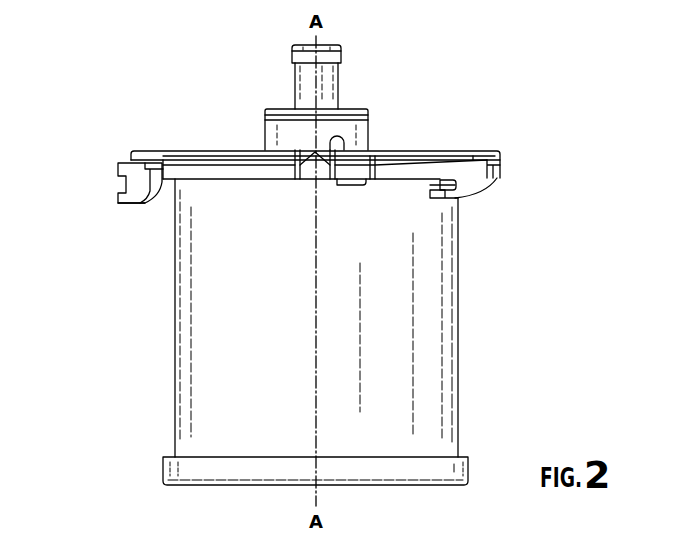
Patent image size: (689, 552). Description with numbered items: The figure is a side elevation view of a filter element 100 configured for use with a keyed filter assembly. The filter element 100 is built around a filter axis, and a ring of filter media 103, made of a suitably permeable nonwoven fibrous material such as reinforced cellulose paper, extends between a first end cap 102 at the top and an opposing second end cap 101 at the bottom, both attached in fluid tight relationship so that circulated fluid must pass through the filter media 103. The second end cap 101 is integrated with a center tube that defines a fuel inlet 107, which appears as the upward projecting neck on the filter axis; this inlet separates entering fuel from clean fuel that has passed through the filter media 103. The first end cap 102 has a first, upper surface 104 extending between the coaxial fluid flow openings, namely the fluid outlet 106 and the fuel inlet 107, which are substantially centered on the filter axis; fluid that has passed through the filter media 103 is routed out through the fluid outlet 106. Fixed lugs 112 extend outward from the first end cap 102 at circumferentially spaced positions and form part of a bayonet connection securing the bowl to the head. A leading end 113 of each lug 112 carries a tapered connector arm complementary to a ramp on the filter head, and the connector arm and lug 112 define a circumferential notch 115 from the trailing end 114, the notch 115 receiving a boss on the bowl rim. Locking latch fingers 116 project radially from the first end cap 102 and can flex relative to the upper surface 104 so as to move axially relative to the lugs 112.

The filter element 100 is at (115, 118).
The second end cap 101 is at (468, 464).
The first end cap 102 is at (500, 160).
The filter media 103 is at (369, 335).
The first surface 104 is at (421, 150).
The fluid outlet 106 is at (266, 135).
The fuel inlet 107 is at (333, 85).
The lug 112 is at (116, 168).
The leading end 113 is at (150, 205).
The trailing end 114 is at (384, 183).
The circumferential notch 115 is at (434, 186).
The locking latch finger 116 is at (308, 182).